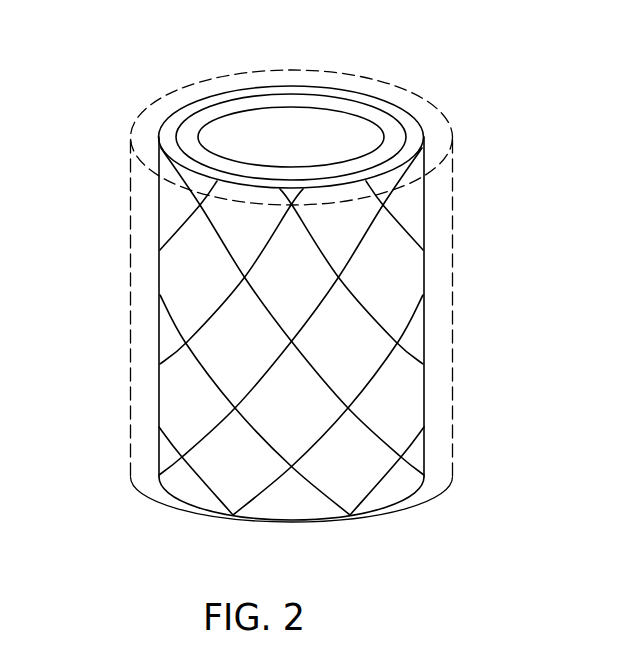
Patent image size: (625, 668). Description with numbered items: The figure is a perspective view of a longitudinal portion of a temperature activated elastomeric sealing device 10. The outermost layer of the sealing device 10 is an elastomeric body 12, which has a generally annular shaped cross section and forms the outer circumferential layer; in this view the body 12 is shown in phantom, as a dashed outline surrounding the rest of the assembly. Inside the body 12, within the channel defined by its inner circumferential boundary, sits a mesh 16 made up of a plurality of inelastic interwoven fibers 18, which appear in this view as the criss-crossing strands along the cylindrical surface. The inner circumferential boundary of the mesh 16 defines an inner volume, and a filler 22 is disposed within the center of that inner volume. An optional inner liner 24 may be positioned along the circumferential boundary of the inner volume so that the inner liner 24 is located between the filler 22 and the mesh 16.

The sealing device 10 is at (277, 293).
The elastomeric body 12 is at (418, 113).
The mesh 16 is at (298, 152).
The inelastic interwoven fibers 18 is at (210, 323).
The filler 22 is at (220, 142).
The inner liner 24 is at (212, 159).